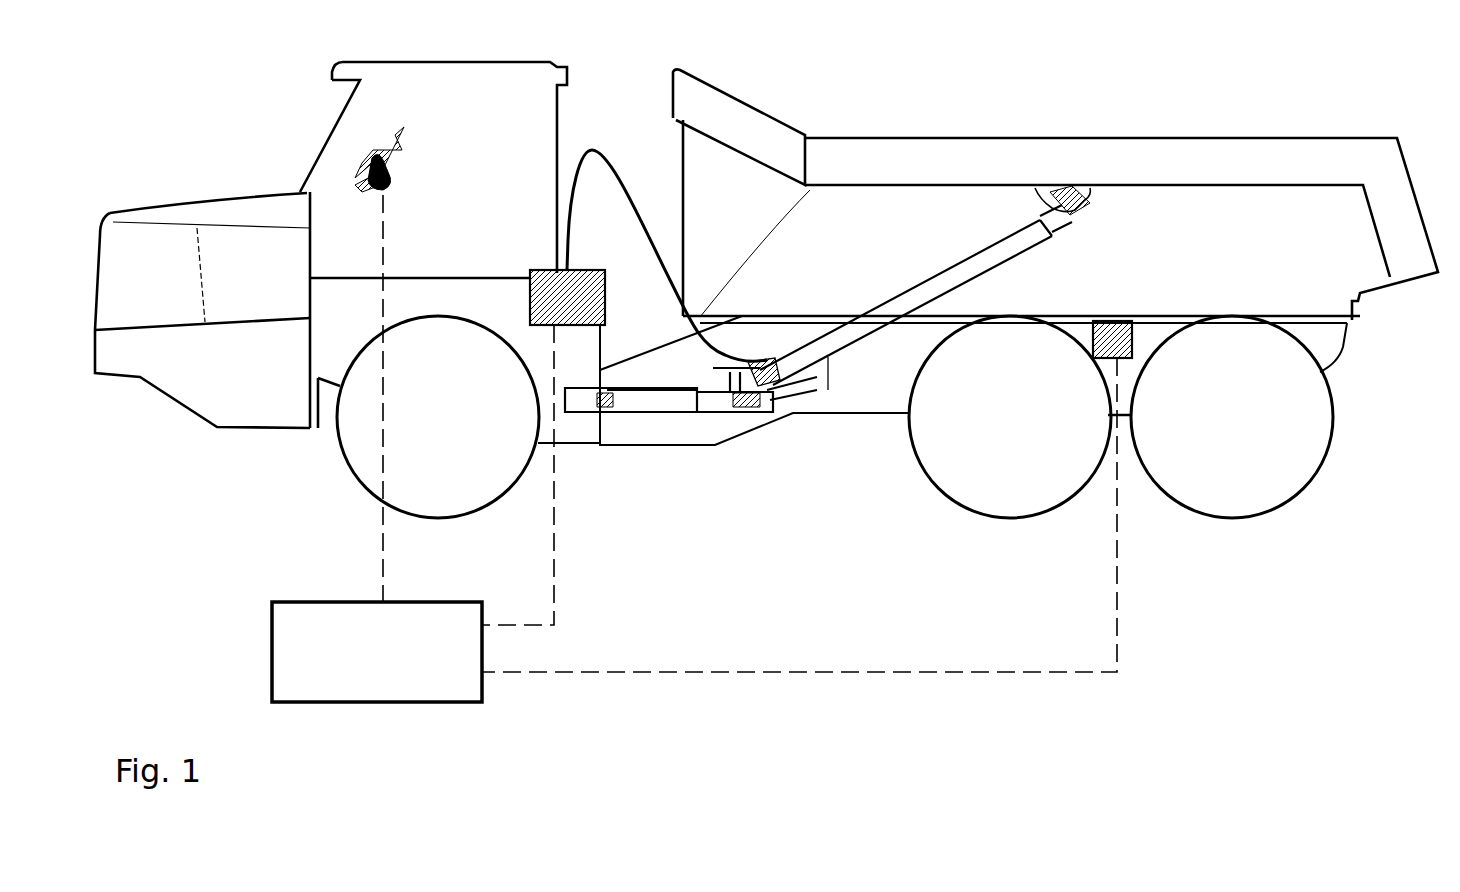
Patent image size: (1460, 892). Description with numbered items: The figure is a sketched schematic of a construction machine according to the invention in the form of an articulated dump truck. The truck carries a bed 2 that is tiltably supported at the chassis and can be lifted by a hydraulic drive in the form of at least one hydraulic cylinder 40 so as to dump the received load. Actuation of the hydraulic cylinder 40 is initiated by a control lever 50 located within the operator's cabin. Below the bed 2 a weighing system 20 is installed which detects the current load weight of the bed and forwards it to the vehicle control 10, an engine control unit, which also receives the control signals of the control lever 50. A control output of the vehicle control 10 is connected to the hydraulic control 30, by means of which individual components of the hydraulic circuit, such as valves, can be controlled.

The bed 2 is at (1033, 158).
The vehicle control 10 is at (307, 601).
The weighing system 20 is at (1120, 320).
The hydraulic control 30 is at (565, 328).
The hydraulic cylinder 40 is at (867, 333).
The control lever 50 is at (362, 146).